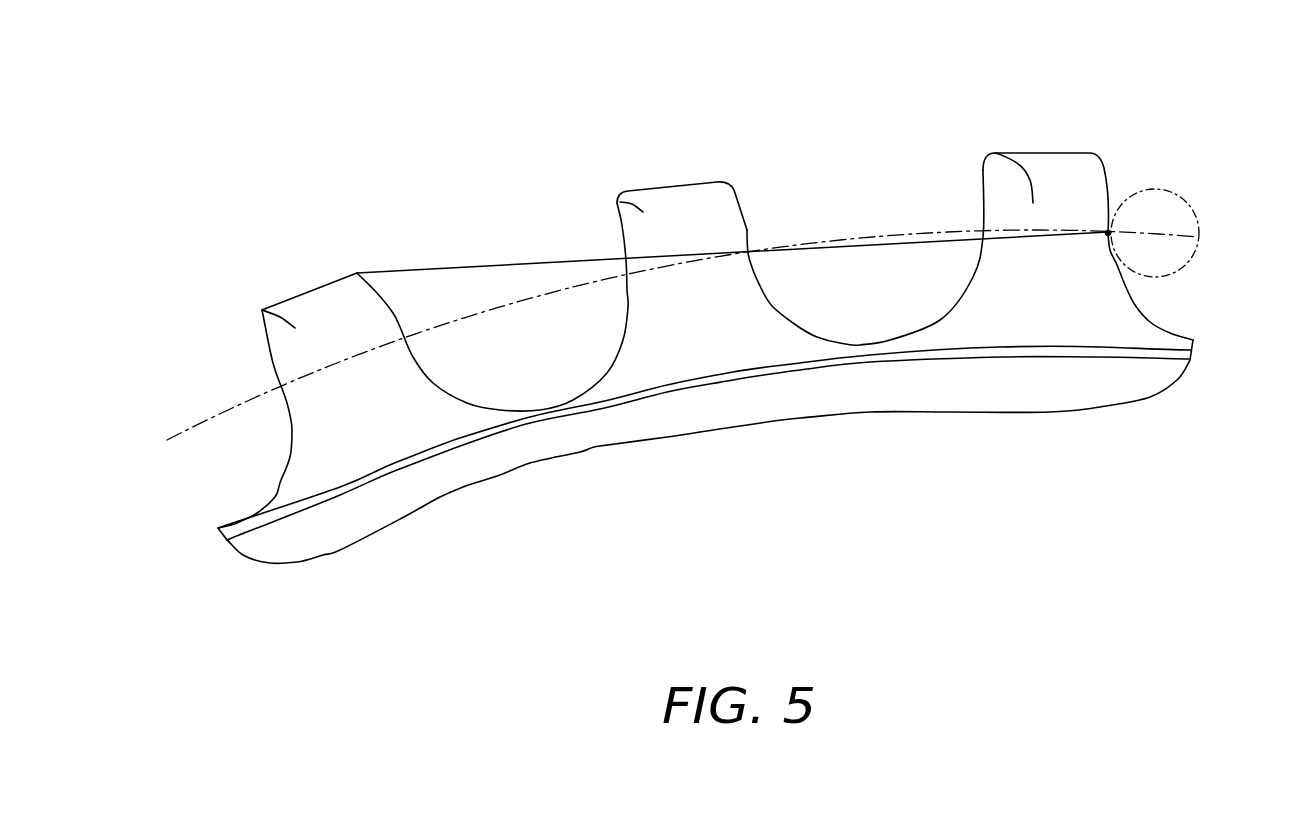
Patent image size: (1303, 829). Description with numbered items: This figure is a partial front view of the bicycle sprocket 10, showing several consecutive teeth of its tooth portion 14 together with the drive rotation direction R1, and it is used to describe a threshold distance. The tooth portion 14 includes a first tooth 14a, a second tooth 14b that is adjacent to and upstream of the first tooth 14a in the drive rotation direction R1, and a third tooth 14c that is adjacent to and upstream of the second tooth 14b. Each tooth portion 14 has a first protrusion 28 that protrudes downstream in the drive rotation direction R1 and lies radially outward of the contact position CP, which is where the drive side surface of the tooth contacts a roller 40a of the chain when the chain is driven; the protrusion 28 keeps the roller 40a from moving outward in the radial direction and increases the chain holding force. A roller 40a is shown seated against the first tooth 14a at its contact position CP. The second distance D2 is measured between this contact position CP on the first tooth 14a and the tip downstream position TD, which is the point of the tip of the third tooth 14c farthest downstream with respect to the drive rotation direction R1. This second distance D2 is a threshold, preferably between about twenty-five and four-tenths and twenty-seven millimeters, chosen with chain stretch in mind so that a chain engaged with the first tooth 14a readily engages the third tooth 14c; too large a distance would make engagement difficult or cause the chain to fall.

The sprocket 10 is at (252, 475).
The tooth portion 14 is at (1085, 133).
The first tooth 14a is at (995, 153).
The second tooth 14b is at (620, 202).
The third tooth 14c is at (262, 310).
The first protrusion 28 is at (397, 313).
The roller 40a is at (1178, 187).
The contact position CP is at (1108, 233).
The tip downstream position TD is at (357, 273).
The second distance D2 is at (732, 246).
The drive rotation direction R1 is at (1073, 76).